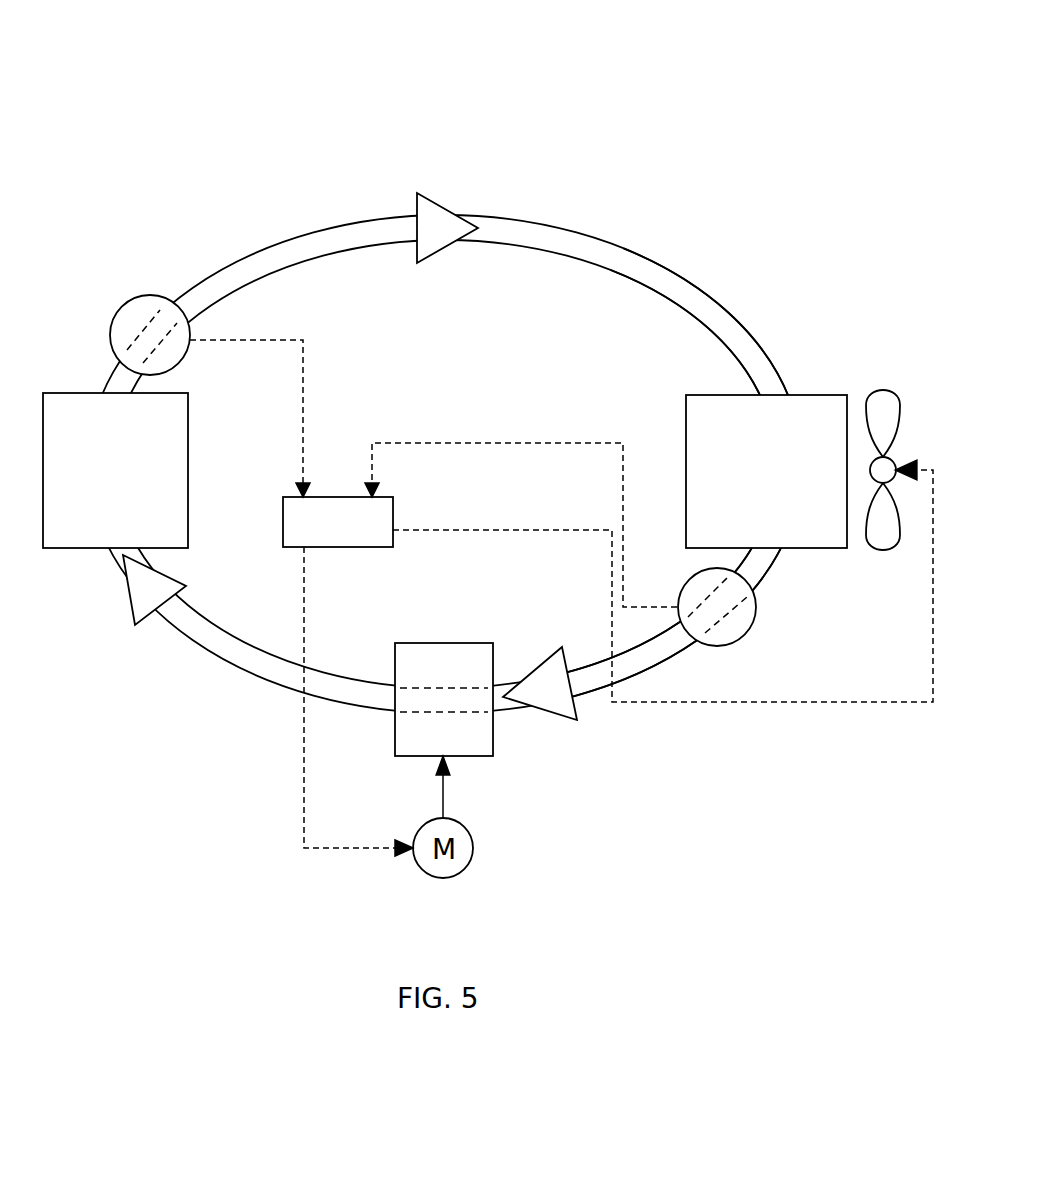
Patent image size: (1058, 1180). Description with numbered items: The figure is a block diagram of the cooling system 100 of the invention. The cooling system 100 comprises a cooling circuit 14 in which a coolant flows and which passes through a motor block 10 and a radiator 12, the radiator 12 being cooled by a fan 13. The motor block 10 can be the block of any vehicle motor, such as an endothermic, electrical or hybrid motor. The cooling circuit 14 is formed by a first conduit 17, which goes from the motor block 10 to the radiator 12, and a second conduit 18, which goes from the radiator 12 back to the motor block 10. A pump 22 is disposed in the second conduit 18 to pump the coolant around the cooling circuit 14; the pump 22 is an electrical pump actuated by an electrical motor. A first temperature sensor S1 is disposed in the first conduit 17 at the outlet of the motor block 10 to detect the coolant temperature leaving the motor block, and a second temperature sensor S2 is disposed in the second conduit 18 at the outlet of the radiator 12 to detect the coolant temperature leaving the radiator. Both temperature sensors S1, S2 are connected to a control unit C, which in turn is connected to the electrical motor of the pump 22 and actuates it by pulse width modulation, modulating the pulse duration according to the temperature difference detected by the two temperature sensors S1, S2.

The cooling system 100 is at (237, 168).
The cooling circuit 14 is at (622, 207).
The first conduit 17 is at (665, 267).
The second conduit 18 is at (597, 697).
The motor block 10 is at (65, 422).
The radiator 12 is at (803, 398).
The fan 13 is at (883, 400).
The pump 22 is at (473, 734).
The first temperature sensor S1 is at (145, 318).
The second temperature sensor S2 is at (738, 611).
The control unit C is at (293, 537).